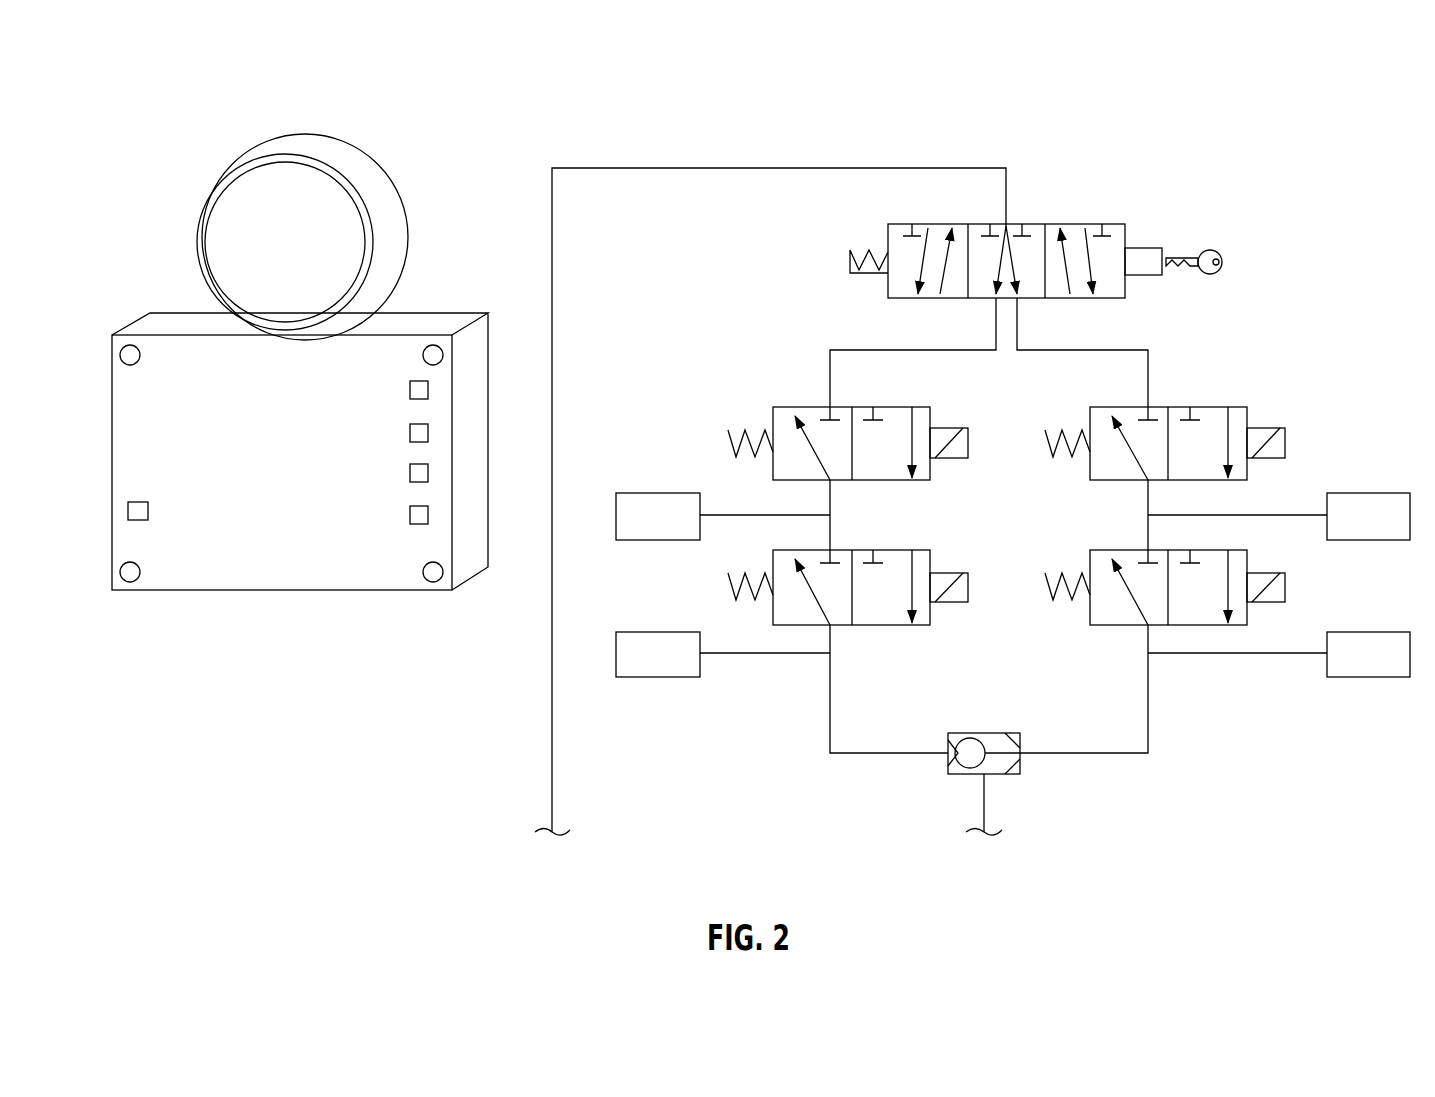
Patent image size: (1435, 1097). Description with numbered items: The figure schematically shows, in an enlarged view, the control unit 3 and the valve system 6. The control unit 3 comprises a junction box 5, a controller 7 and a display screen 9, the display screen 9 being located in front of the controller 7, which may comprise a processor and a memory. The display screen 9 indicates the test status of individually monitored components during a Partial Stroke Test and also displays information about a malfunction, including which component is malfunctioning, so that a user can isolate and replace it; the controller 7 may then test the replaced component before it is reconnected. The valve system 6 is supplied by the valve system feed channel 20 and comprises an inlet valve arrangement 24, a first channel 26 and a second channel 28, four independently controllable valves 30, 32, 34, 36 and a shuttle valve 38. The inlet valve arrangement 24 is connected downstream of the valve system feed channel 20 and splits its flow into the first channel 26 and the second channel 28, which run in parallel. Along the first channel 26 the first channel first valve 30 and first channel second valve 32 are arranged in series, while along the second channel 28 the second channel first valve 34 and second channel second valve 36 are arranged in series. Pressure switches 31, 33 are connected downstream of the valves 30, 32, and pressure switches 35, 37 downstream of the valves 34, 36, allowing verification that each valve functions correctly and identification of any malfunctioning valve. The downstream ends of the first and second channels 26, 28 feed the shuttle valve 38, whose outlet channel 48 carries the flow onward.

The control unit 3 is at (184, 152).
The junction box 5 is at (258, 590).
The valve system 6 is at (1266, 180).
The controller 7 is at (335, 138).
The display screen 9 is at (216, 235).
The valve system feed channel 20 is at (552, 693).
The inlet valve arrangement 24 is at (1037, 224).
The first channel 26 is at (893, 350).
The second channel 28 is at (1092, 350).
The first channel first valve 30 is at (785, 407).
The first channel first pressure switch 31 is at (658, 493).
The first channel second valve 32 is at (785, 550).
The first channel second pressure switch 33 is at (658, 632).
The second channel first valve 34 is at (1176, 407).
The second channel first pressure switch 35 is at (1370, 493).
The second channel second valve 36 is at (1176, 550).
The second channel second pressure switch 37 is at (1370, 632).
The shuttle valve 38 is at (985, 733).
The outlet channel 48 is at (984, 798).